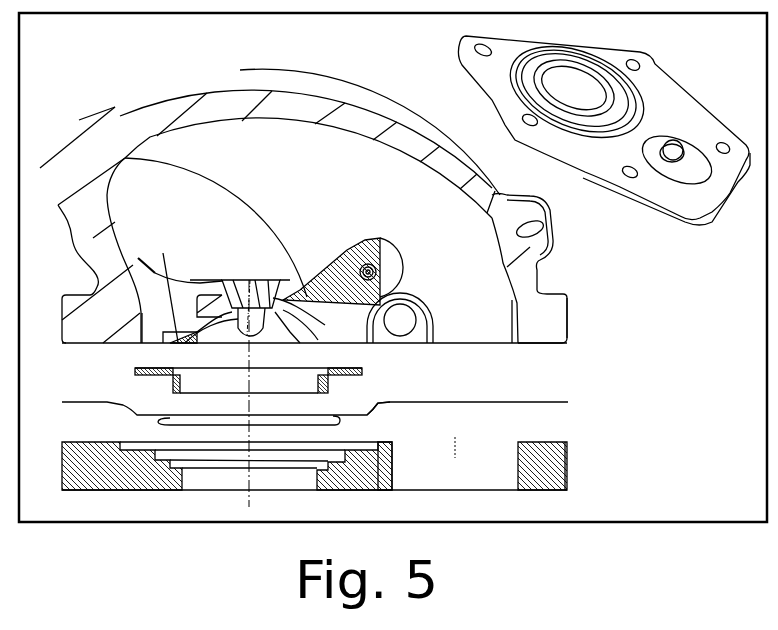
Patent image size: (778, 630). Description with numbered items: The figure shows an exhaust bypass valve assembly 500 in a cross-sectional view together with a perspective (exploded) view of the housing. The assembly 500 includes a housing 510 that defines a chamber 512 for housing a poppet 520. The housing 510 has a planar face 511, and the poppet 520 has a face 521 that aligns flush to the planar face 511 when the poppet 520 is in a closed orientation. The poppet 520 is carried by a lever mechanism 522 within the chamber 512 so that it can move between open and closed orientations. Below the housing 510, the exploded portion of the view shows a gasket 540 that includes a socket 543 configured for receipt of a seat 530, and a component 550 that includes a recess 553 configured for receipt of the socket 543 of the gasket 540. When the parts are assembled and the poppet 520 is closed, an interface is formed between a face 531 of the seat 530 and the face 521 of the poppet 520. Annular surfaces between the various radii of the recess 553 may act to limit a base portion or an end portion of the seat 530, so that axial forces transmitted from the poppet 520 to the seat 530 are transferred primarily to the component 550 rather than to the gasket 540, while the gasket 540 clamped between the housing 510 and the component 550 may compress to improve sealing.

The assembly 500 is at (81, 49).
The housing 510 is at (558, 313).
The planar face 511 is at (530, 343).
The chamber 512 is at (189, 212).
The poppet 520 is at (163, 253).
The face of the poppet 521 is at (168, 345).
The rocker lever 522 is at (343, 247).
The seat 530 is at (363, 368).
The face of the seat 531 is at (157, 367).
The gasket 540 is at (557, 402).
The socket 543 is at (377, 403).
The component 550 is at (568, 460).
The recess 553 is at (380, 440).